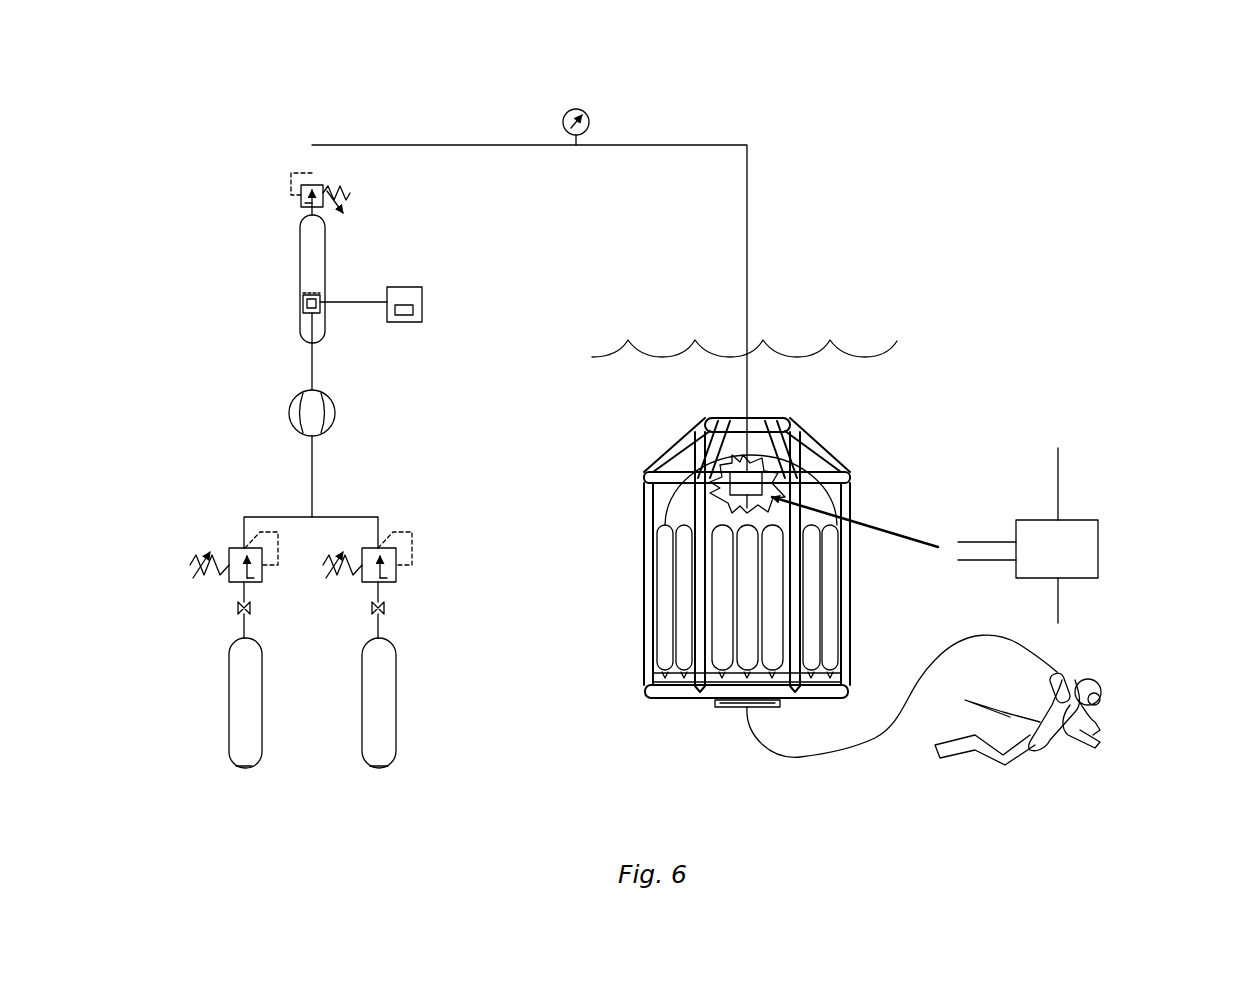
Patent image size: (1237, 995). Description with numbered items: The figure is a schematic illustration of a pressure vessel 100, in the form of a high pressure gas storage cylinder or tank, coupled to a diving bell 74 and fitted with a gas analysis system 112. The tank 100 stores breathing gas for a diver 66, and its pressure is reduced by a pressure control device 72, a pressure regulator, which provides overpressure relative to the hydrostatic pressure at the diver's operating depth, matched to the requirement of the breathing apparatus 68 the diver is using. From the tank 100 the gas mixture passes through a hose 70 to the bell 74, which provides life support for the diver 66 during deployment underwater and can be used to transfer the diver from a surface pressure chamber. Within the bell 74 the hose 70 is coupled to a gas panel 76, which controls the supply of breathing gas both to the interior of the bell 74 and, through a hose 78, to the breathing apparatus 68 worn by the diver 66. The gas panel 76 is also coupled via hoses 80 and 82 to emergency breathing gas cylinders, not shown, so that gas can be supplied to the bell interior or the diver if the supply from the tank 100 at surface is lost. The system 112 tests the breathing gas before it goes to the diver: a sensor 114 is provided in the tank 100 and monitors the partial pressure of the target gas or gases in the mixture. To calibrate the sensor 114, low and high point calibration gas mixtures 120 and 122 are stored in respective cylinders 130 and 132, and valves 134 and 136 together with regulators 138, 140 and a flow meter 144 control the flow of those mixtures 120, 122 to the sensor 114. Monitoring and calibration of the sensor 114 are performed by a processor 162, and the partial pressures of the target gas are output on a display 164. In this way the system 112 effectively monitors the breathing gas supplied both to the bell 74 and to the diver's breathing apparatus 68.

The diver 66 is at (1077, 661).
The breathing apparatus 68 is at (1110, 713).
The hose 70 is at (747, 232).
The pressure control device 72 is at (285, 177).
The diving bell 74 is at (880, 452).
The gas panel 76 is at (1098, 530).
The hose 78 is at (820, 760).
The hose 80 is at (973, 540).
The hose 82 is at (972, 563).
The pressure vessel 100 is at (295, 282).
The gas analysis system 112 is at (470, 572).
The sensor 114 is at (301, 312).
The low point calibration gas mixture 120 is at (243, 690).
The high point calibration gas mixture 122 is at (380, 708).
The cylinder 130 is at (244, 768).
The cylinder 132 is at (378, 768).
The valve 134 is at (238, 610).
The valve 136 is at (385, 612).
The regulator 138 is at (262, 585).
The regulator 140 is at (396, 582).
The flow meter 144 is at (335, 420).
The processor 162 is at (422, 290).
The display 164 is at (413, 312).